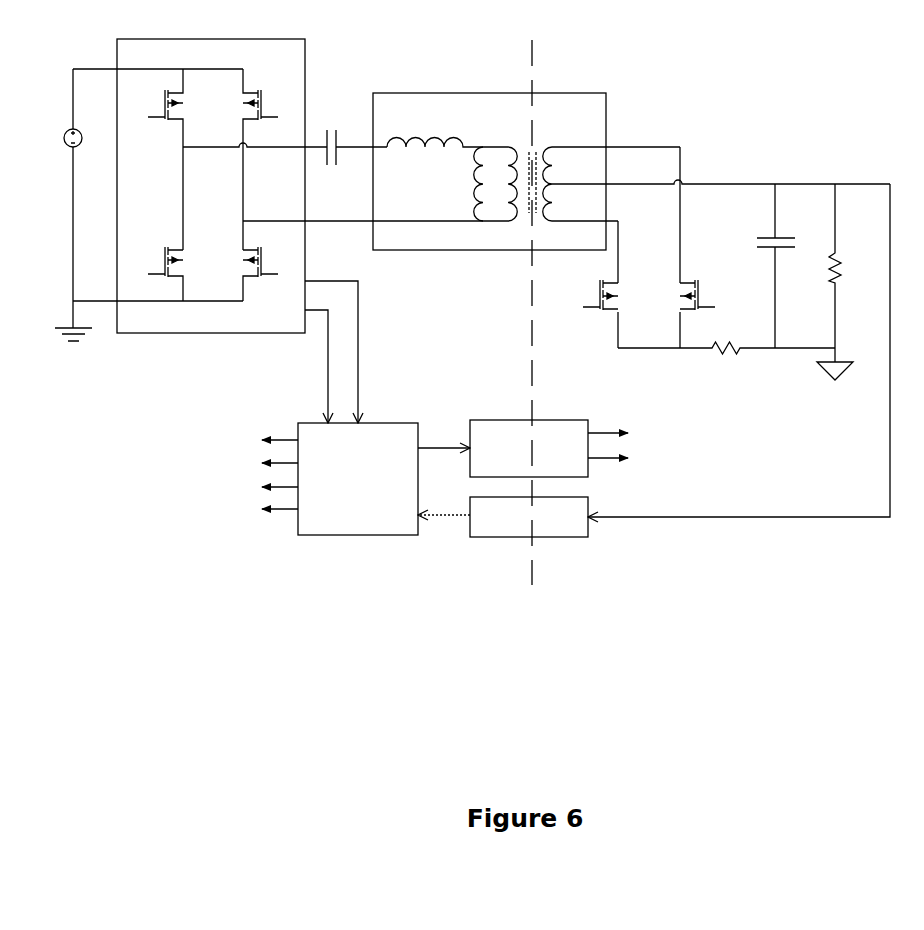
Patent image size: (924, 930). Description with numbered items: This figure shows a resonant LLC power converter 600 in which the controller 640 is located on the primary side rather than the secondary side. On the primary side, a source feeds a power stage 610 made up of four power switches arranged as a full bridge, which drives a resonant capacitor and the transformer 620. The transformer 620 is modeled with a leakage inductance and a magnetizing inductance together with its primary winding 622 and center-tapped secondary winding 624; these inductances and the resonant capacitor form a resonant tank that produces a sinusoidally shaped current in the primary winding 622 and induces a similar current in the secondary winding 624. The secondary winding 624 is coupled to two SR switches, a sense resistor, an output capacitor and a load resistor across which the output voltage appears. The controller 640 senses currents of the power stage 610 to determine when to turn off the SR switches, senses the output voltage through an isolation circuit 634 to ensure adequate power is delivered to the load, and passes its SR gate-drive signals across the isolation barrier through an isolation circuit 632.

The power converter 600 is at (863, 38).
The power stage 610 is at (211, 173).
The transformer 620 is at (631, 155).
The primary winding 622 is at (510, 165).
The secondary winding 624 is at (716, 165).
The isolation circuit 632 is at (529, 432).
The isolation circuit 634 is at (529, 532).
The controller 640 is at (358, 495).